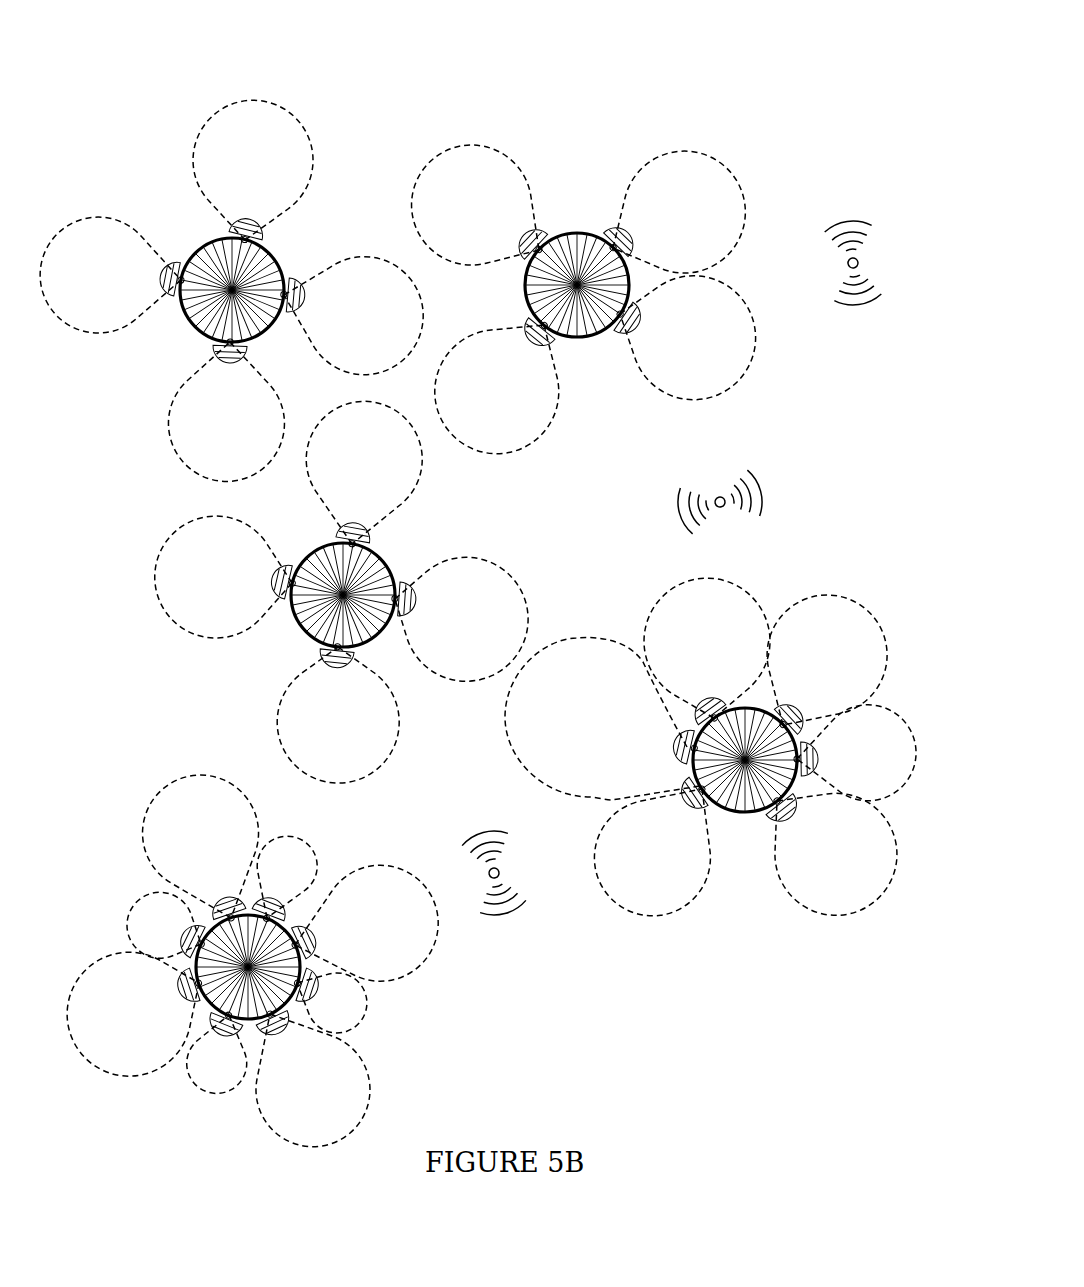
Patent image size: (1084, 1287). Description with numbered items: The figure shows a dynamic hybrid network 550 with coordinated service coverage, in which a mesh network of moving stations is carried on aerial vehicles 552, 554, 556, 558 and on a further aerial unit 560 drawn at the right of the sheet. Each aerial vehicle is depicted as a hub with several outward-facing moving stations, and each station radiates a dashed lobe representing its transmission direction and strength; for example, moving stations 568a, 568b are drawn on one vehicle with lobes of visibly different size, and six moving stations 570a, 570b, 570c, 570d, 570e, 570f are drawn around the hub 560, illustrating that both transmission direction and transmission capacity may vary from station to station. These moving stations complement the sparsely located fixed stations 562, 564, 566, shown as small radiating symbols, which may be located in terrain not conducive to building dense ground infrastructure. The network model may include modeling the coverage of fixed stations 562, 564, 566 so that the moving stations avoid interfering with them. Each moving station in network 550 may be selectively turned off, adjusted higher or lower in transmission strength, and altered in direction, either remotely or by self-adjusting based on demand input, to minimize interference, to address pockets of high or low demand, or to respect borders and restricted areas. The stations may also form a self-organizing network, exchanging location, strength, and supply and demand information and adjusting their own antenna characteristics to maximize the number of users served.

The network 550 is at (184, 84).
The aerial vehicle 552 is at (282, 262).
The aerial vehicle 554 is at (592, 232).
The aerial vehicle 556 is at (393, 560).
The aerial vehicle 558 is at (262, 947).
The antenna unit 560 is at (734, 755).
The fixed station 562 is at (860, 262).
The fixed station 564 is at (718, 496).
The fixed station 566 is at (502, 873).
The moving station 568a is at (300, 992).
The moving station 568b is at (225, 890).
The moving station 570a is at (707, 697).
The moving station 570b is at (792, 715).
The moving station 570c is at (800, 760).
The moving station 570d is at (793, 823).
The moving station 570e is at (682, 800).
The moving station 570f is at (687, 747).